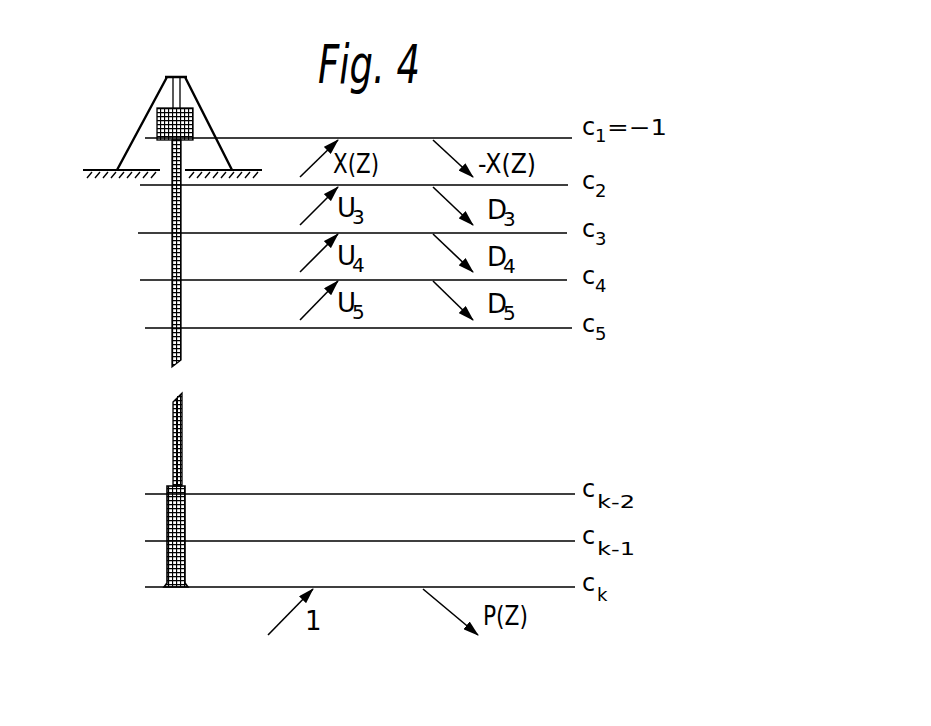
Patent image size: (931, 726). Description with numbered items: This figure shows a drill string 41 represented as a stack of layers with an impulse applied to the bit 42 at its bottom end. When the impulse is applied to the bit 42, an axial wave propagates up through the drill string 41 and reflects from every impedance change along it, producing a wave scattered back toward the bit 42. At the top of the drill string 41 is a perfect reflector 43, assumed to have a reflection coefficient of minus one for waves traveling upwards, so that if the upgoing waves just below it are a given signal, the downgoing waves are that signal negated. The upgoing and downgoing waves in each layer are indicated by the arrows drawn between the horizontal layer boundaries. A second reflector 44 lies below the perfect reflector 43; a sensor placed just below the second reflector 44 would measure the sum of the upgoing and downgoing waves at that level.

The drill string 41 is at (145, 354).
The bit 42 is at (153, 593).
The perfect reflector 43 is at (128, 122).
The second reflector 44 is at (140, 193).